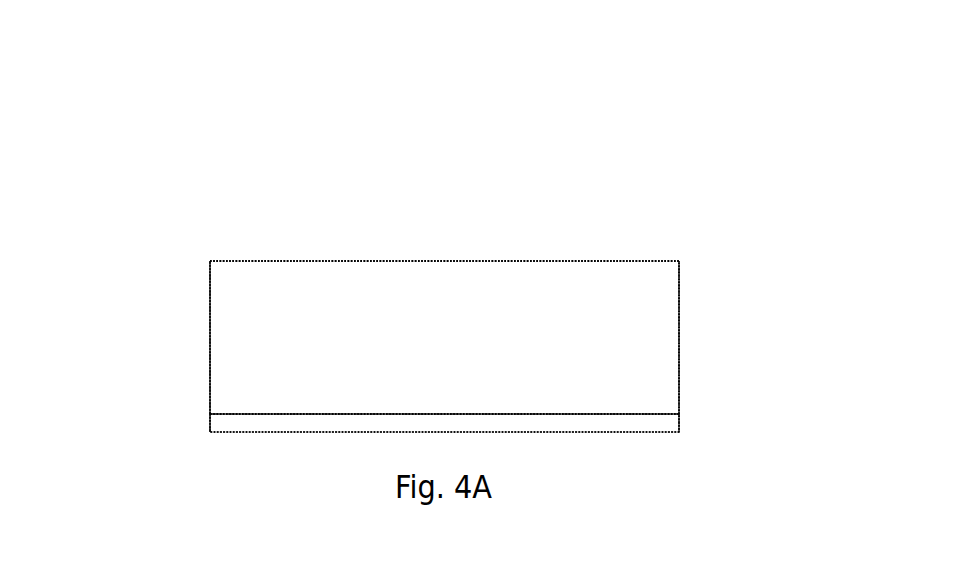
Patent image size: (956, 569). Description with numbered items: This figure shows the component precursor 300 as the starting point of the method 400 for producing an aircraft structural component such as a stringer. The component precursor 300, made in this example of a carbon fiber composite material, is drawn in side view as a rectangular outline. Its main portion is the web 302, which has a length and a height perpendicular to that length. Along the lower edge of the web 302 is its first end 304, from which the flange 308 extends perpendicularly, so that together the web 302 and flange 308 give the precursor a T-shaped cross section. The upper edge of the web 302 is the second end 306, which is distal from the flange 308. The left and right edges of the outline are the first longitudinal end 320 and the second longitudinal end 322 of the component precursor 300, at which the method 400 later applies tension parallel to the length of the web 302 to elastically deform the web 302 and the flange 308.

The method 400 is at (211, 146).
The component precursor 300 is at (182, 283).
The web 302 is at (415, 297).
The second end 306 is at (589, 251).
The first longitudinal end 320 is at (199, 375).
The second longitudinal end 322 is at (692, 277).
The first end 304 is at (664, 397).
The flange 308 is at (694, 425).